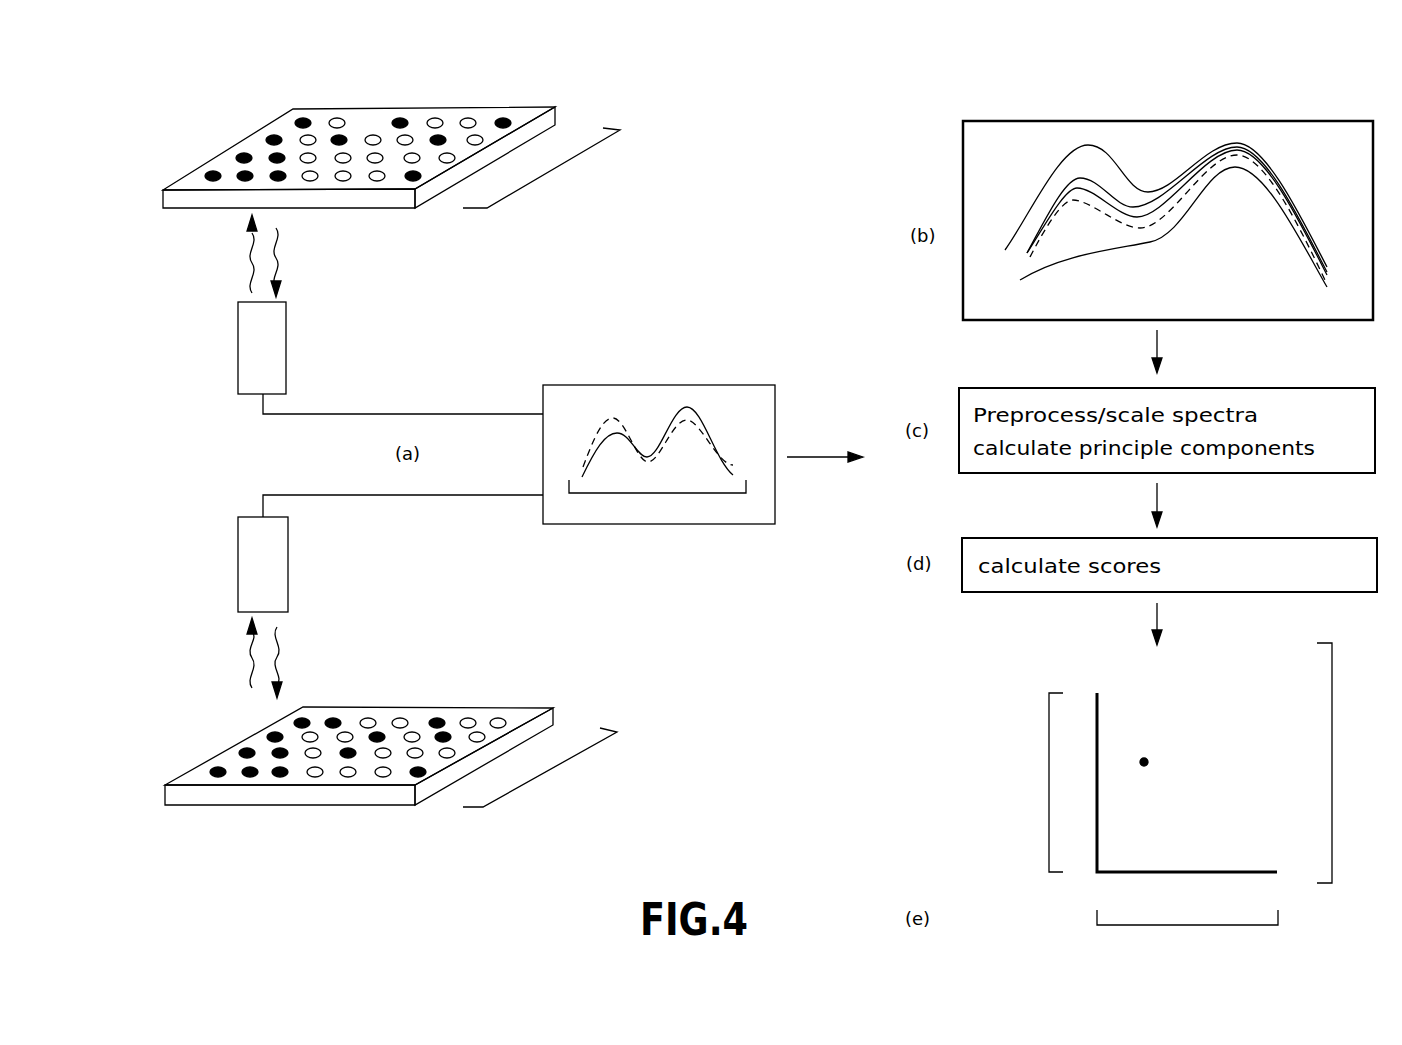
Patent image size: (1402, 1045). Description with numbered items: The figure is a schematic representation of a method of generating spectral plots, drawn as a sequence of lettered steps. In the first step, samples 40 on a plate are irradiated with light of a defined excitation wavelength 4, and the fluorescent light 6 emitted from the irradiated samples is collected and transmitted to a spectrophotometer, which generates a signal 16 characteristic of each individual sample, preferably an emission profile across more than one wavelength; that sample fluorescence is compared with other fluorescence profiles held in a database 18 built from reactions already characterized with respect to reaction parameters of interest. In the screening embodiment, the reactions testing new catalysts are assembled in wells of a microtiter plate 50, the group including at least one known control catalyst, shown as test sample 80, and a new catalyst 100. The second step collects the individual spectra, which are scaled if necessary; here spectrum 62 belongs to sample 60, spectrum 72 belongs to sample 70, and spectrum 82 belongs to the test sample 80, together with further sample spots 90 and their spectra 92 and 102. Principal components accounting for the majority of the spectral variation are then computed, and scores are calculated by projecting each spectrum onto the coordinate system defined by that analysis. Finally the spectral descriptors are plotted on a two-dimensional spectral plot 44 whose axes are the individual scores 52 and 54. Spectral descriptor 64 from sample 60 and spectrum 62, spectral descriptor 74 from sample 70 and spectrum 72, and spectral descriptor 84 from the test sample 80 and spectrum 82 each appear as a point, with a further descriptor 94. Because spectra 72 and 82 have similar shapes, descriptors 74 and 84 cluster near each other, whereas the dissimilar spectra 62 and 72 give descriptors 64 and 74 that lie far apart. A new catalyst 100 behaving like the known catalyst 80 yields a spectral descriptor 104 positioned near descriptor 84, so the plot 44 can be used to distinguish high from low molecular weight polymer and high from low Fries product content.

The excitation wavelength 4 is at (248, 250).
The fluorescent light 6 is at (278, 255).
The signal 16 is at (660, 453).
The database 18 is at (625, 420).
The samples 40 is at (558, 172).
The spectral plot 44 is at (1333, 753).
The microtiter plate 50 is at (550, 772).
The score 52 is at (1192, 925).
The score 54 is at (1049, 770).
The sample 60 is at (307, 120).
The spectrum 62 is at (1148, 242).
The spectral descriptor 64 is at (1257, 688).
The sample 70 is at (345, 137).
The spectrum 72 is at (1072, 180).
The spectral descriptor 74 is at (1128, 700).
The test sample 80 is at (406, 121).
The spectrum 82 is at (1153, 218).
The spectral descriptor 84 is at (1128, 735).
The fourth sample spot 90 is at (420, 174).
The spectrum of fourth sample 92 is at (1093, 213).
The score point of fourth sample 94 is at (1128, 833).
The new catalyst 100 is at (249, 758).
The spectrum of fifth sample 102 is at (1108, 218).
The spectral descriptor 104 is at (1248, 793).